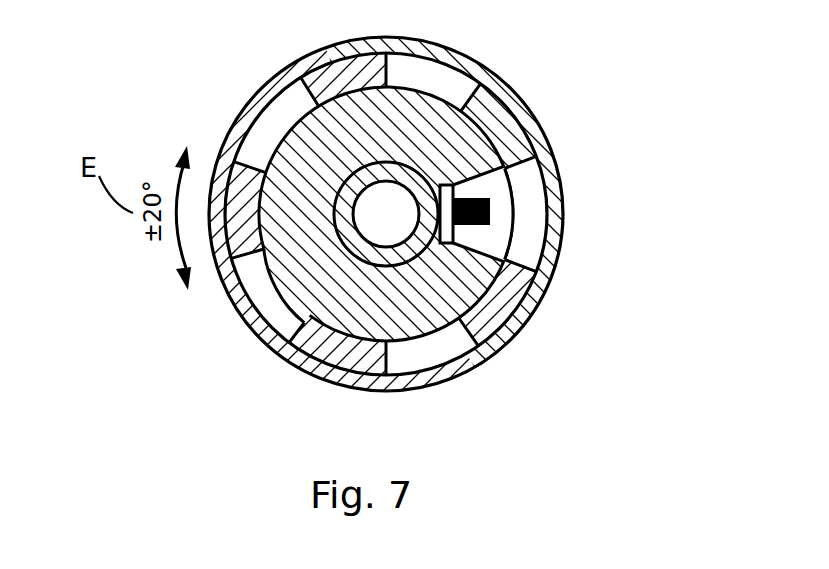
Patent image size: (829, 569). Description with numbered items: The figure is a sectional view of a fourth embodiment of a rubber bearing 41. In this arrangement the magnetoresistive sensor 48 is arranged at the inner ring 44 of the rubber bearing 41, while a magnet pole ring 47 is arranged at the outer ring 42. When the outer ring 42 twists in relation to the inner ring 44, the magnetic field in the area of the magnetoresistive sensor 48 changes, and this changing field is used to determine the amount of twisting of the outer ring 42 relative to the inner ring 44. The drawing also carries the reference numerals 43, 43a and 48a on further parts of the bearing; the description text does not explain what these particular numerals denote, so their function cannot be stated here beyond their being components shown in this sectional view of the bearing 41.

The rubber bearing 41 is at (292, 60).
The outer ring 42 is at (258, 87).
The stop segment 43 is at (450, 133).
The inclined stop surface 43a is at (478, 172).
The inner ring 44 is at (400, 254).
The magnet pole ring 47 is at (527, 183).
The magnetoresistive sensor 48 is at (490, 208).
The spring plate 48a is at (459, 248).